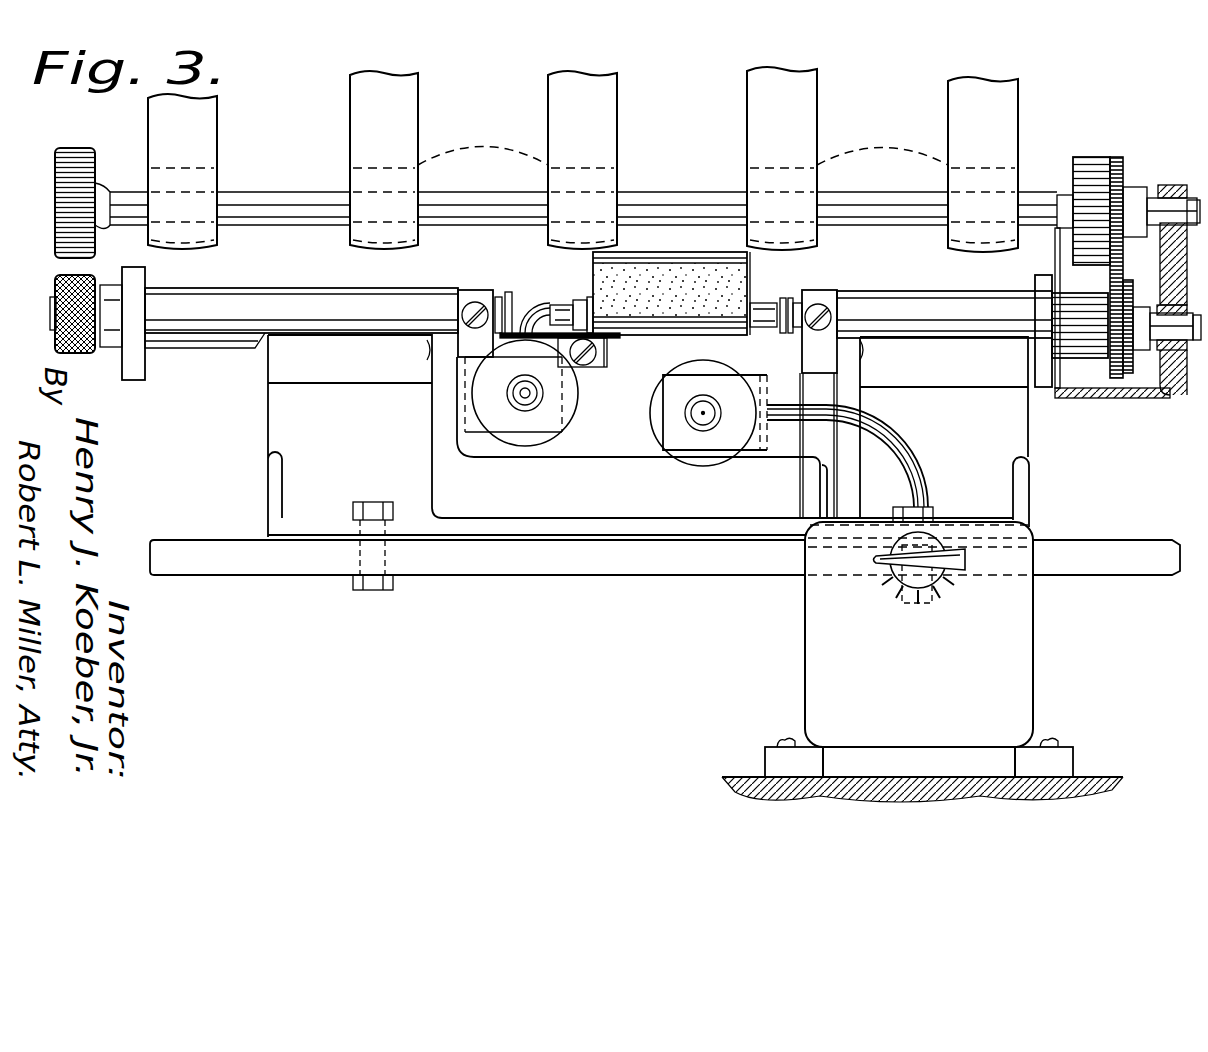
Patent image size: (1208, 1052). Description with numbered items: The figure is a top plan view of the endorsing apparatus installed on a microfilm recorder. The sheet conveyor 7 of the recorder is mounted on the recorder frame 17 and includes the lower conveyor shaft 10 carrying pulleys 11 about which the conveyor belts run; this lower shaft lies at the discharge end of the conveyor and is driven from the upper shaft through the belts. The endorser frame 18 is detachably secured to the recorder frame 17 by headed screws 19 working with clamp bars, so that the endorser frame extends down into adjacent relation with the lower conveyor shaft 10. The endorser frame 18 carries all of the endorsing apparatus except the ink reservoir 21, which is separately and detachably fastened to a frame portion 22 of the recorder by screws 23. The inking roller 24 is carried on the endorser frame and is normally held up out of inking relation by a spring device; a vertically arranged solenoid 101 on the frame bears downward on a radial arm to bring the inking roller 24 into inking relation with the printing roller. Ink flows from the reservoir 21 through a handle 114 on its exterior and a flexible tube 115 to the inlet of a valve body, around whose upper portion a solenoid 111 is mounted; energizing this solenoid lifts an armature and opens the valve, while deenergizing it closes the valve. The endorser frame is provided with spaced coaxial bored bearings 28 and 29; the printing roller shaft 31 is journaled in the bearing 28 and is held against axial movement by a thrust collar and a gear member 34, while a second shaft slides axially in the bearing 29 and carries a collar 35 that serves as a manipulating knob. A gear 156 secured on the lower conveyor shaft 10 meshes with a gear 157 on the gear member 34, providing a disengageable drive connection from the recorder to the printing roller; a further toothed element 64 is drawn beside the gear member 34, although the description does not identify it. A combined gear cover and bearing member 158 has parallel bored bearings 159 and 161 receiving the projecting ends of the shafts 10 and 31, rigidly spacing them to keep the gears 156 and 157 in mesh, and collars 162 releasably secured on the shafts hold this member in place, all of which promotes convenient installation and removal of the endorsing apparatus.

The conveyor 7 is at (1034, 119).
The lower conveyor shaft 10 is at (1029, 206).
The pulleys 11 is at (683, 148).
The frame 17 is at (276, 572).
The endorser frame 18 is at (268, 466).
The headed screws 19 is at (376, 504).
The ink reservoir 21 is at (1020, 623).
The frame portion 22 is at (737, 775).
The screws 23 is at (780, 737).
The inking roller 24 is at (732, 288).
The bearing 28 is at (930, 292).
The bearing 29 is at (232, 350).
The shaft 31 is at (1168, 322).
The gear member 34 is at (1147, 328).
The collar 35 is at (60, 277).
The small gear 64 is at (1130, 282).
The solenoid 101 is at (538, 440).
The solenoid 111 is at (660, 402).
The handle 114 is at (884, 561).
The flexible tube 115 is at (917, 458).
The gear 156 is at (1118, 158).
The gear 157 is at (1112, 282).
The combined gear cover and bearing member 158 is at (1147, 400).
The bored bearing 159 is at (1176, 186).
The bored bearing 161 is at (1163, 352).
The collars 162 is at (1194, 198).